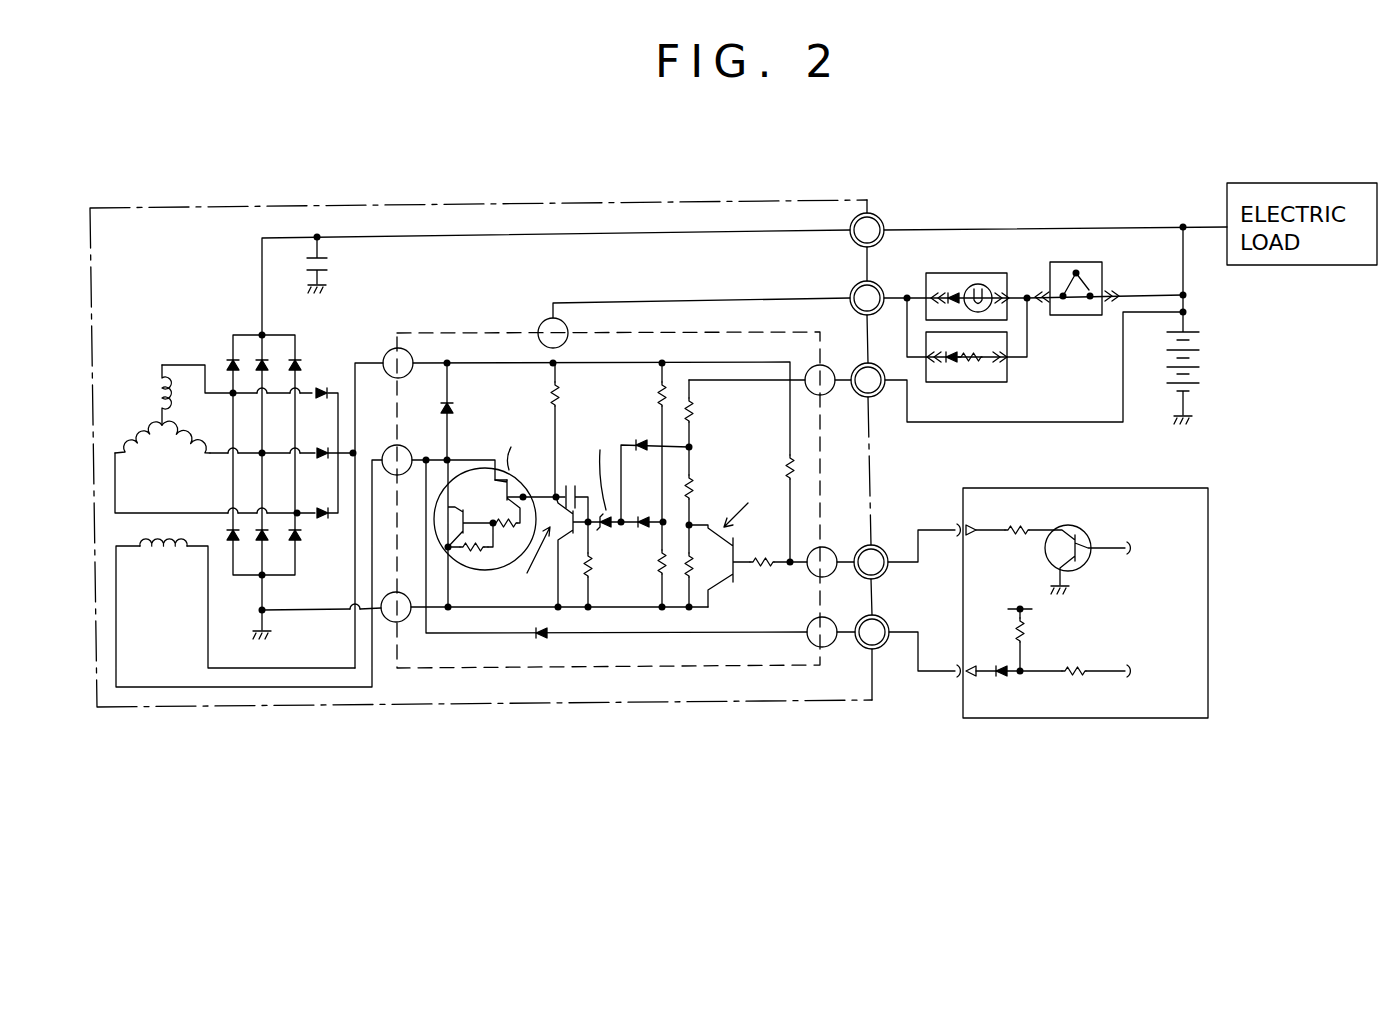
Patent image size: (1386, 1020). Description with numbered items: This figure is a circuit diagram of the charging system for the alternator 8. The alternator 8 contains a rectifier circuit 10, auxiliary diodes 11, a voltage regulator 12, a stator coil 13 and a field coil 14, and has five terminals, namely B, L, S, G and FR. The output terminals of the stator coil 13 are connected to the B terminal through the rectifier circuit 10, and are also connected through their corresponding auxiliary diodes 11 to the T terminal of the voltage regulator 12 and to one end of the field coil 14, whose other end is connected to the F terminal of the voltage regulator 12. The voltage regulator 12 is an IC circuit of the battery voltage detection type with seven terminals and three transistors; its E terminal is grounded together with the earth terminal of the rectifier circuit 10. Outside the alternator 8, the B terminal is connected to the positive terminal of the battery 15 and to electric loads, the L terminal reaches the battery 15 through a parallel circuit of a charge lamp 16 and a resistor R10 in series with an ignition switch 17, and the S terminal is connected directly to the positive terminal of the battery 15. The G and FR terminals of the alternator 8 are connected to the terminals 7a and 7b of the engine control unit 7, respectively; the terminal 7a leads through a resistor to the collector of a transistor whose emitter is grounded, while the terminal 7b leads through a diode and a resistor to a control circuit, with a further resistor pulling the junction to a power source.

The engine control unit 7 is at (1165, 718).
The terminal 7a is at (957, 528).
The terminal 7b is at (957, 678).
The alternator 8 is at (742, 200).
The rectifier circuit 10 is at (240, 326).
The auxiliary diodes 11 is at (320, 388).
The voltage regulator 12 is at (470, 330).
The stator coil 13 is at (145, 390).
The field coil 14 is at (162, 555).
The battery 15 is at (1198, 352).
The charge lamp 16 is at (983, 273).
The ignition switch 17 is at (1065, 316).
The resistor R10 is at (975, 383).